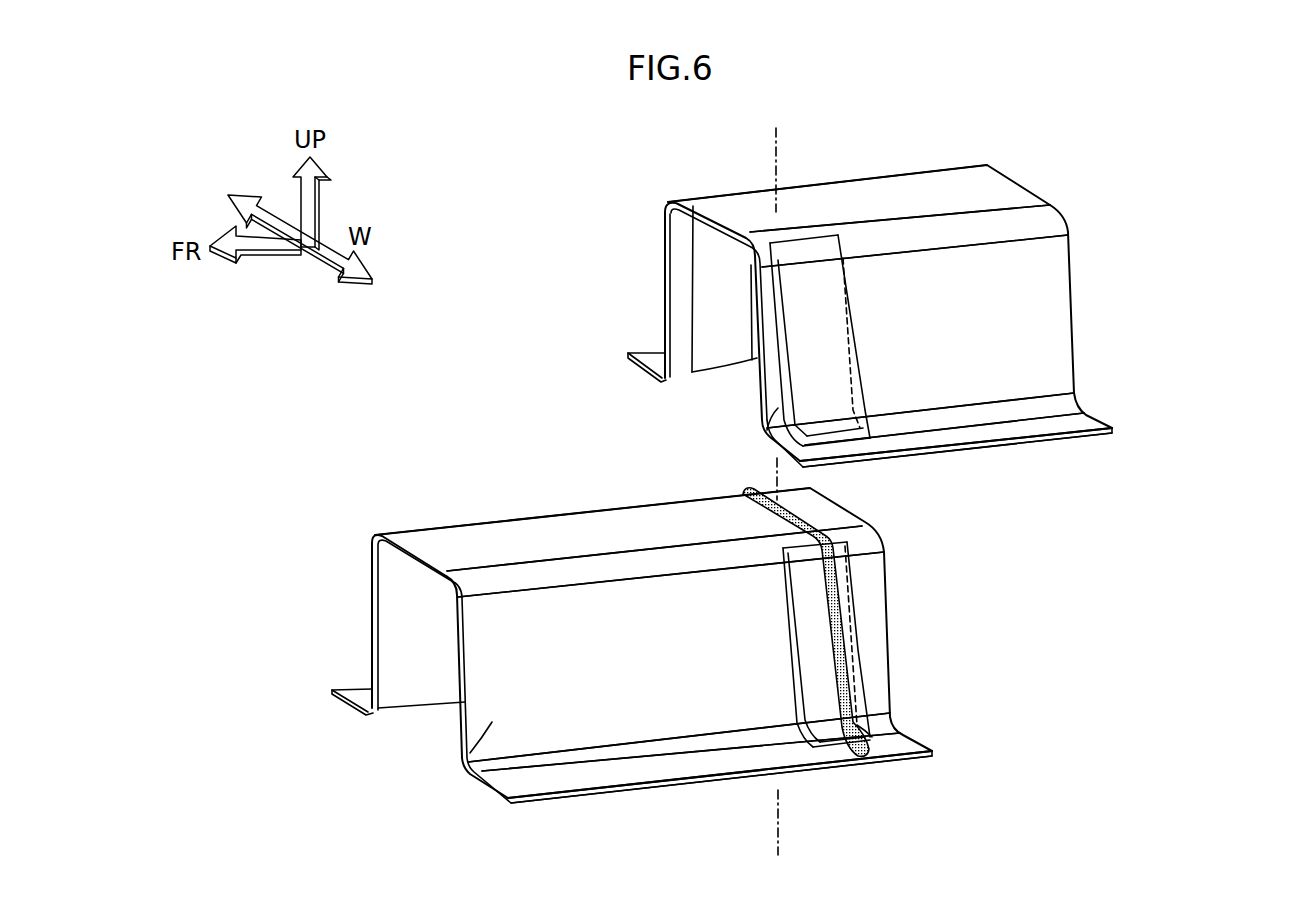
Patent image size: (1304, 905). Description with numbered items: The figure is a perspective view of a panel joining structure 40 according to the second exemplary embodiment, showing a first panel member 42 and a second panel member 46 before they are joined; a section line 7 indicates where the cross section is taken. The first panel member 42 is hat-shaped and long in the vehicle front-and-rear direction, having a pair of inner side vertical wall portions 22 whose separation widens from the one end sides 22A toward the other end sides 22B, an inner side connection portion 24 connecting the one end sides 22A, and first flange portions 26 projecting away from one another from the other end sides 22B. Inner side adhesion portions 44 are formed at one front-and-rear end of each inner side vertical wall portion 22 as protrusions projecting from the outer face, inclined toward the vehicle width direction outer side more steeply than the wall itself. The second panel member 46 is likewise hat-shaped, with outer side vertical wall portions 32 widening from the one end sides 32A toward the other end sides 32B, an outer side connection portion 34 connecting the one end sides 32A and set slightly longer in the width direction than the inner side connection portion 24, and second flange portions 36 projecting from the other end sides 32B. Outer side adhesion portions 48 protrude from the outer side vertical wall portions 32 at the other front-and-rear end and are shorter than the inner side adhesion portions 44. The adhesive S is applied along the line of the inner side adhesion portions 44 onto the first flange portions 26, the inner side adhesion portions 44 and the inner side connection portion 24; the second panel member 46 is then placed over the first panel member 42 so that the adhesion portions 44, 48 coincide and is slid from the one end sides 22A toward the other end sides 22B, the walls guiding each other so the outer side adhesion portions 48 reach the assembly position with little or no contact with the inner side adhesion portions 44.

The section line 7- 7 is at (768, 140).
The panel joining structure 40 is at (1223, 163).
The first panel member 42 is at (356, 450).
The second panel member 46 is at (1016, 136).
The inner side vertical wall portions 22 is at (466, 753).
The one end sides 22A is at (465, 588).
The other end sides 22B is at (488, 770).
The inner side connection portion 24 is at (520, 534).
The first flange portions 26 is at (352, 686).
The outer side vertical wall portions 32 is at (765, 428).
The one end sides 32A is at (1022, 231).
The other end sides 32B is at (1064, 408).
The outer side connection portion 34 is at (836, 196).
The second flange portions 36 is at (650, 352).
The inner side adhesion portions 44 is at (815, 688).
The outer side adhesion portions 48 is at (808, 288).
The adhesive S is at (835, 630).